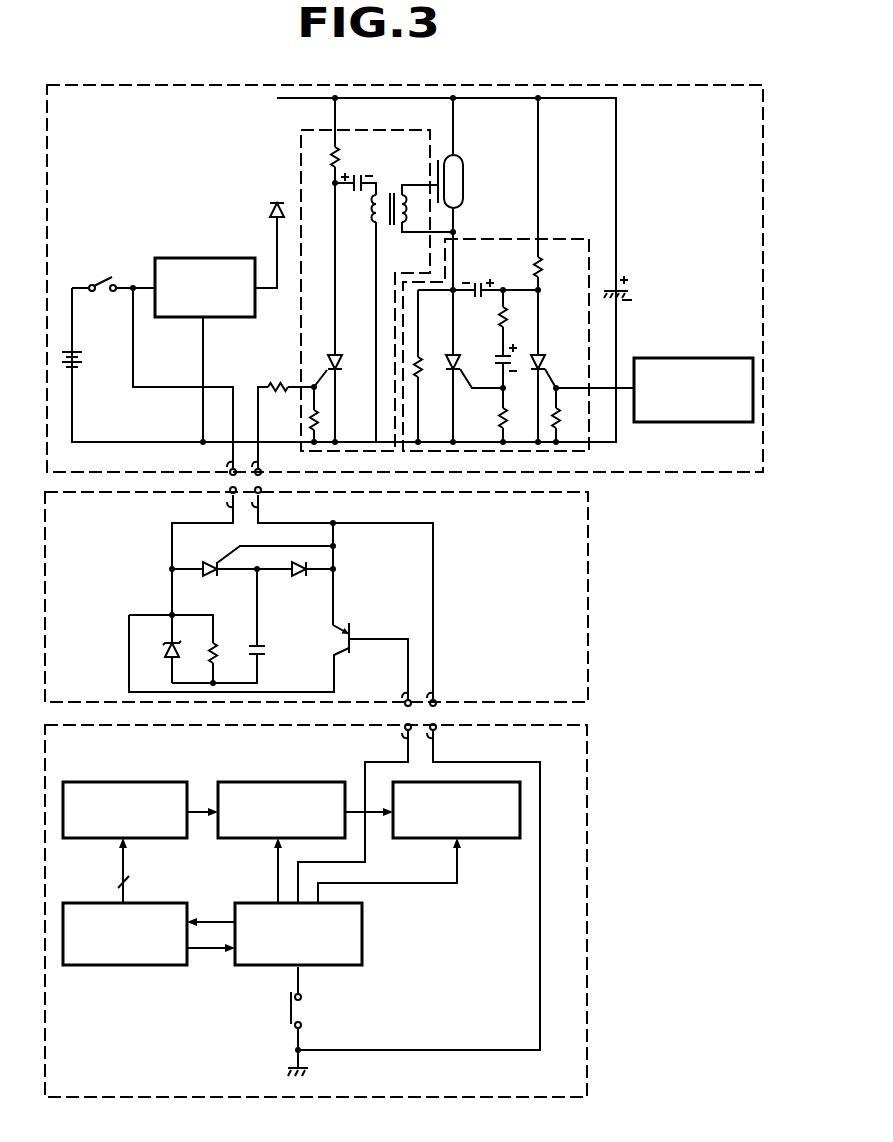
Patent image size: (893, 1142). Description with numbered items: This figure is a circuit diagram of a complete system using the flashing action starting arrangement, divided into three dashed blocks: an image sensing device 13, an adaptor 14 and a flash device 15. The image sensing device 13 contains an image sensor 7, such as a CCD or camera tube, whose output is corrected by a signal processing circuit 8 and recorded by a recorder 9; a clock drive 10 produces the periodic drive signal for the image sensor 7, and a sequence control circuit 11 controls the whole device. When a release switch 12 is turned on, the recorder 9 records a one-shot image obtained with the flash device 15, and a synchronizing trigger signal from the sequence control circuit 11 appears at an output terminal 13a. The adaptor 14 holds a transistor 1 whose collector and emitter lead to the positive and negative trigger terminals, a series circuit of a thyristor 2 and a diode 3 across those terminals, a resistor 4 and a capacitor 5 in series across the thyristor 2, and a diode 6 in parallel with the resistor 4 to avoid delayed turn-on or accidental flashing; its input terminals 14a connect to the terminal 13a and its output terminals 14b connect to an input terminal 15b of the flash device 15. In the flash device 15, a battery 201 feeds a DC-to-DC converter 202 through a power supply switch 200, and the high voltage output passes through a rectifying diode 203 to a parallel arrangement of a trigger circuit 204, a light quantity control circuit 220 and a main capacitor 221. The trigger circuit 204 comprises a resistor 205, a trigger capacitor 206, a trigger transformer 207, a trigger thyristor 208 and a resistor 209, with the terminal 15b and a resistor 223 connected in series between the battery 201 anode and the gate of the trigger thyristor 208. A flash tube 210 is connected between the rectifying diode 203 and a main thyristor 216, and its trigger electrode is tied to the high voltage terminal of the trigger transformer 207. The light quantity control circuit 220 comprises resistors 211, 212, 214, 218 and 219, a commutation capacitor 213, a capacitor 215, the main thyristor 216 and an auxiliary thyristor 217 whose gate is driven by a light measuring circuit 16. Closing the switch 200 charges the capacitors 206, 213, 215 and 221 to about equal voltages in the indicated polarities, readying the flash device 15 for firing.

The transistor 1 is at (346, 616).
The thyristor 2 is at (211, 578).
The diode 3 is at (296, 577).
The resistor 4 is at (207, 657).
The capacitor 5 is at (266, 652).
The diode 6 is at (165, 658).
The image sensor 7 is at (171, 782).
The signal processing circuit 8 is at (323, 782).
The recorder 9 is at (508, 840).
The clock drive 10 is at (163, 903).
The sequence control circuit 11 is at (363, 915).
The release switch 12 is at (304, 1013).
The image sensing device 13 is at (589, 752).
The output terminal 13a is at (429, 737).
The adaptor 14 is at (589, 689).
The input terminals 14a is at (412, 695).
The output terminals 14b is at (261, 500).
The flash device 15 is at (740, 472).
The input terminal 15b is at (259, 456).
The light measuring circuit 16 is at (718, 358).
The power supply switch 200 is at (103, 280).
The battery 201 is at (84, 360).
The DC-to-DC converter 202 is at (212, 258).
The rectifying diode 203 is at (272, 205).
The trigger circuit 204 is at (386, 130).
The resistor 205 is at (343, 154).
The trigger capacitor 206 is at (358, 192).
The trigger transformer 207 is at (397, 192).
The trigger thyristor 208 is at (329, 355).
The resistor 209 is at (310, 418).
The flash tube 210 is at (463, 162).
The resistor 211 is at (544, 268).
The resistor 212 is at (419, 351).
The commutation capacitor 213 is at (479, 282).
The resistor 214 is at (499, 316).
The capacitor 215 is at (520, 351).
The main thyristor 216 is at (459, 358).
The auxiliary thyristor 217 is at (547, 354).
The resistor 218 is at (499, 421).
The resistor 219 is at (565, 418).
The light quantity control circuit 220 is at (550, 239).
The main capacitor 221 is at (630, 291).
The resistor 223 is at (279, 383).